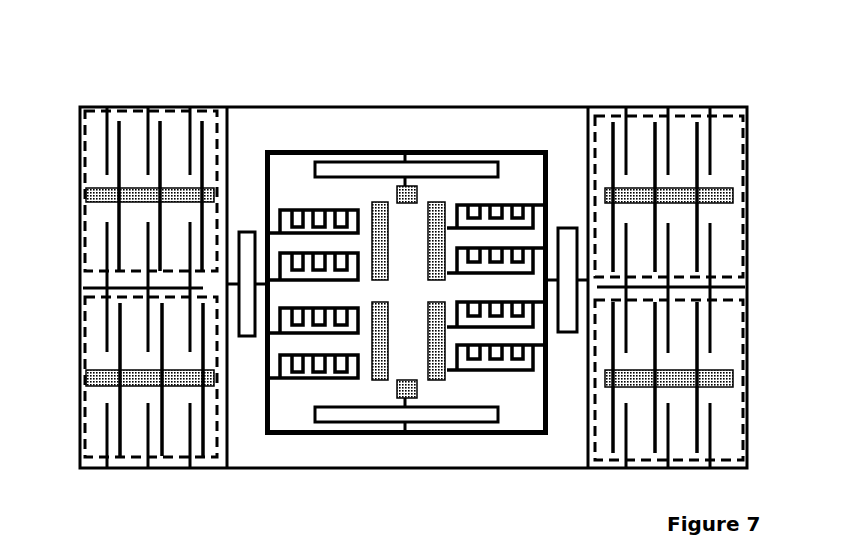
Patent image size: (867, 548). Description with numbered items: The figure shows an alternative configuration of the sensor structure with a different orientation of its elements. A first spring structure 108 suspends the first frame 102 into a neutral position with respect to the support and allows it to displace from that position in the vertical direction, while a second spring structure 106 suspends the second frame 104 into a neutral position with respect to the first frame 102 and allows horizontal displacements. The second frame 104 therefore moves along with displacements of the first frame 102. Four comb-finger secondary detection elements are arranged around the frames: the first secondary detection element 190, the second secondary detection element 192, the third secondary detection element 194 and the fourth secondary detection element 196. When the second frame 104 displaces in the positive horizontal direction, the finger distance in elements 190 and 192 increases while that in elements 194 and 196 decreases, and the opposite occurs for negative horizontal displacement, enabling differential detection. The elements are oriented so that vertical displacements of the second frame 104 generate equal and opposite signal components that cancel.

The first frame 102 is at (312, 152).
The second frame 104 is at (465, 107).
The second spring structure 106 is at (573, 227).
The first spring structure 108 is at (390, 161).
The first secondary detection element 190 is at (747, 364).
The second secondary detection element 192 is at (747, 232).
The third secondary detection element 194 is at (88, 455).
The fourth secondary detection element 196 is at (85, 262).